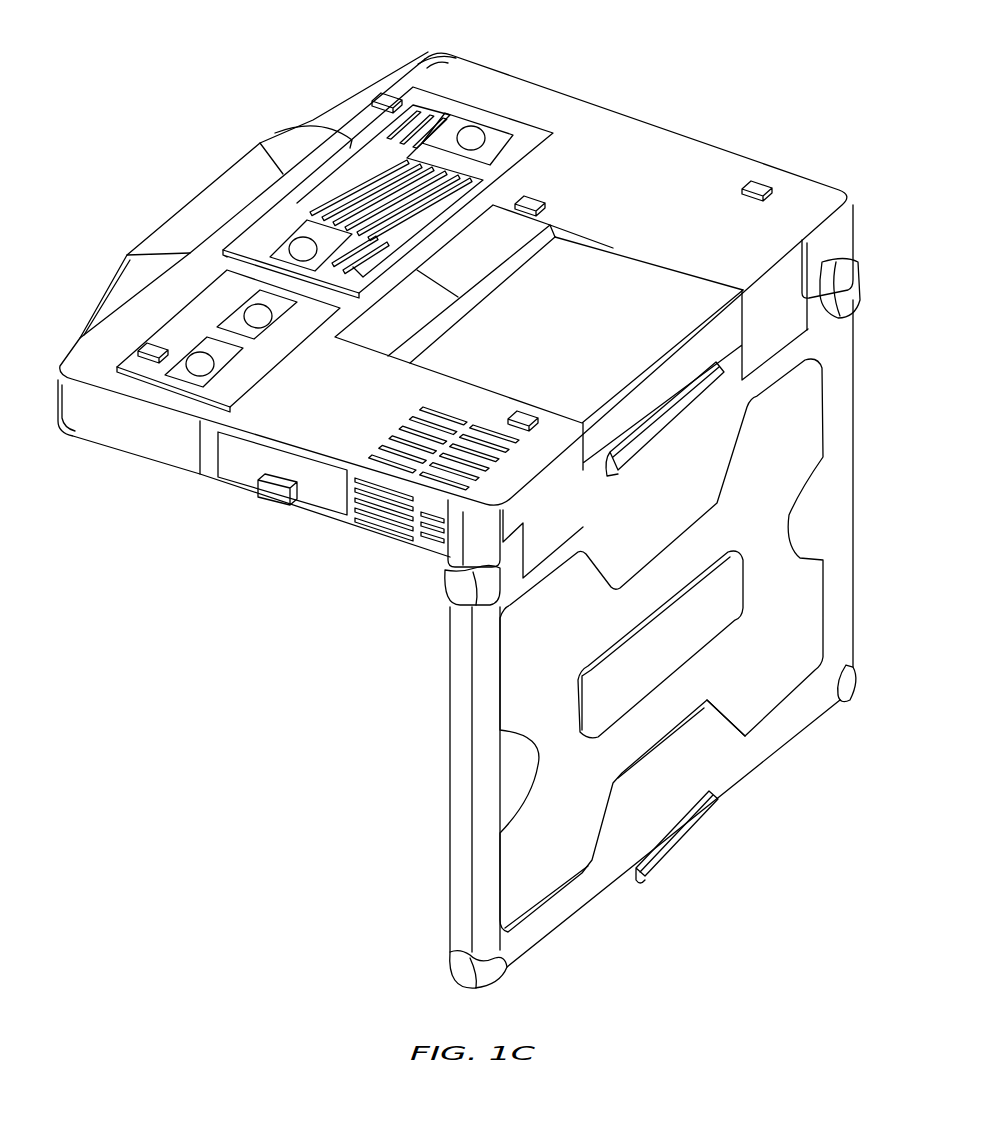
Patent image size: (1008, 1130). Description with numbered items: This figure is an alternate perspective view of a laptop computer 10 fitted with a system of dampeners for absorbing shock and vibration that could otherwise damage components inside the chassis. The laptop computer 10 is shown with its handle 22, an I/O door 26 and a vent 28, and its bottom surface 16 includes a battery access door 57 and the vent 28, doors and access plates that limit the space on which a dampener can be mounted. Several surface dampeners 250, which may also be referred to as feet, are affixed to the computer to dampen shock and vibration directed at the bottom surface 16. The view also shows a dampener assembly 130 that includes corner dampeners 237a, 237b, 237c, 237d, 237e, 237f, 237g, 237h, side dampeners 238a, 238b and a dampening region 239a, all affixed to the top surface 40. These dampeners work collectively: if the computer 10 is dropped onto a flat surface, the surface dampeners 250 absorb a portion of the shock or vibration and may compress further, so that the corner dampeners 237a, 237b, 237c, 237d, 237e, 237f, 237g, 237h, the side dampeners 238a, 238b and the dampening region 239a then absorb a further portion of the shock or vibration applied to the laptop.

The laptop computer 10 is at (231, 652).
The dampener assembly 130 is at (176, 86).
The bottom surface 16 is at (673, 209).
The handle 22 is at (178, 216).
The battery access door 57 is at (317, 123).
The surface dampener 250 is at (148, 343).
The corner dampener 237a is at (490, 68).
The corner dampener 237b is at (822, 240).
The corner dampener 237c is at (132, 460).
The corner dampener 237d is at (448, 560).
The corner dampener 237e is at (847, 692).
The corner dampener 237f is at (457, 973).
The corner dampener 237g is at (855, 282).
The corner dampener 237h is at (453, 590).
The I/O door 26 is at (246, 470).
The vent 28 is at (393, 440).
The side dampener 238a is at (680, 842).
The side dampener 238b is at (630, 466).
The dampening region 239a is at (714, 707).
The top surface 40 is at (796, 808).